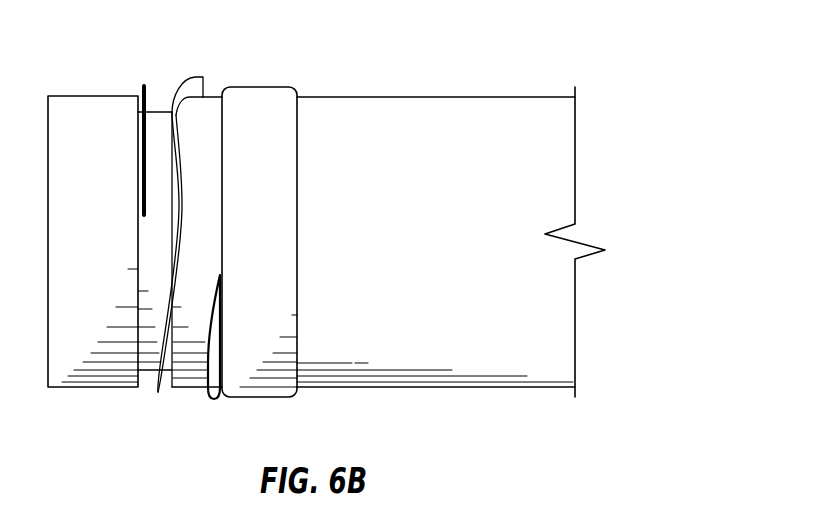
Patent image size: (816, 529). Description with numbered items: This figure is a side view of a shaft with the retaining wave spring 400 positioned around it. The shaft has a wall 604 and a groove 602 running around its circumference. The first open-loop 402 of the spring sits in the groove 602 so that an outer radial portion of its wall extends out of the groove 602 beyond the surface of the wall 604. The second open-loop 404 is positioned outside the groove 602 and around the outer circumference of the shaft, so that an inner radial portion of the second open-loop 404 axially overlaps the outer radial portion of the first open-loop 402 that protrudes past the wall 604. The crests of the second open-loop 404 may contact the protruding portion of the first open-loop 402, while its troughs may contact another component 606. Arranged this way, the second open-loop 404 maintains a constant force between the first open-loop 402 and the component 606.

The retaining wave spring 400 is at (154, 84).
The first open-loop 402 is at (140, 162).
The second open-loop 404 is at (205, 87).
The groove 602 is at (150, 247).
The wall 604 is at (428, 96).
The component 606 is at (299, 223).